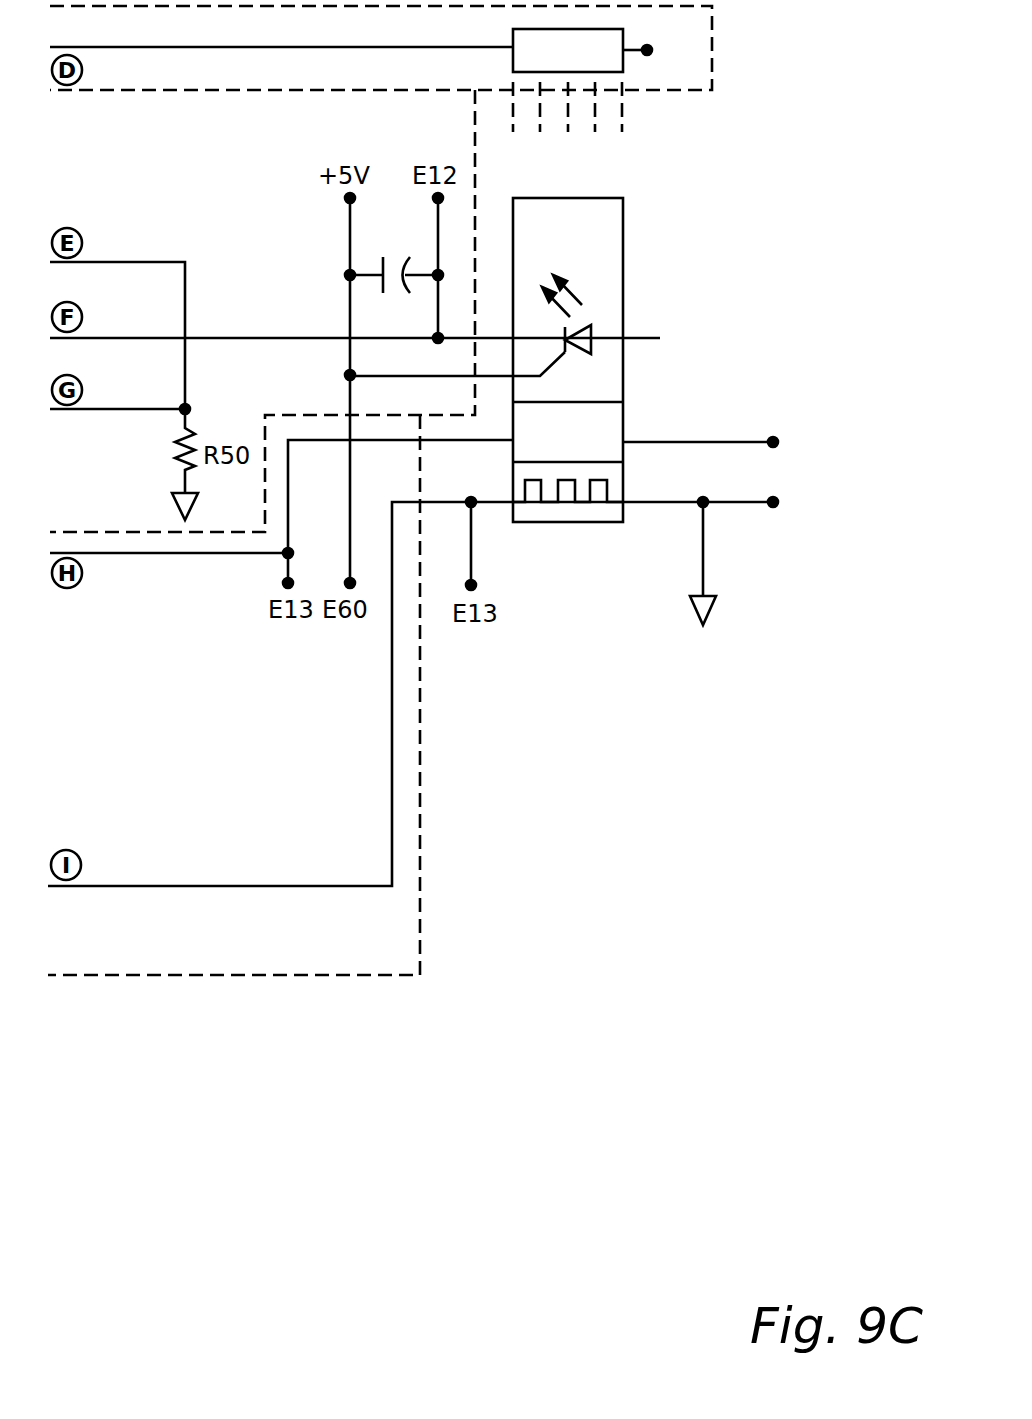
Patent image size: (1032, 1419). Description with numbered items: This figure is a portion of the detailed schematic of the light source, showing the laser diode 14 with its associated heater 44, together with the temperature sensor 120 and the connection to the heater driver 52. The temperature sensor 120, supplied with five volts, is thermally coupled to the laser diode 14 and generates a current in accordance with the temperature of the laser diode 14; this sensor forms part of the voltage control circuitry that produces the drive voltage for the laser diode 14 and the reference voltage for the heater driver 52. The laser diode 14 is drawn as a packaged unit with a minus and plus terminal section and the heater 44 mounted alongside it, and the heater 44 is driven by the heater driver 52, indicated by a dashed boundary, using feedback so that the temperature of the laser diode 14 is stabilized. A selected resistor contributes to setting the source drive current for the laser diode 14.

The temperature sensor 120 is at (513, 60).
The laser diode 14 is at (623, 245).
The heater 44 is at (565, 522).
The heater driver 52 is at (421, 757).